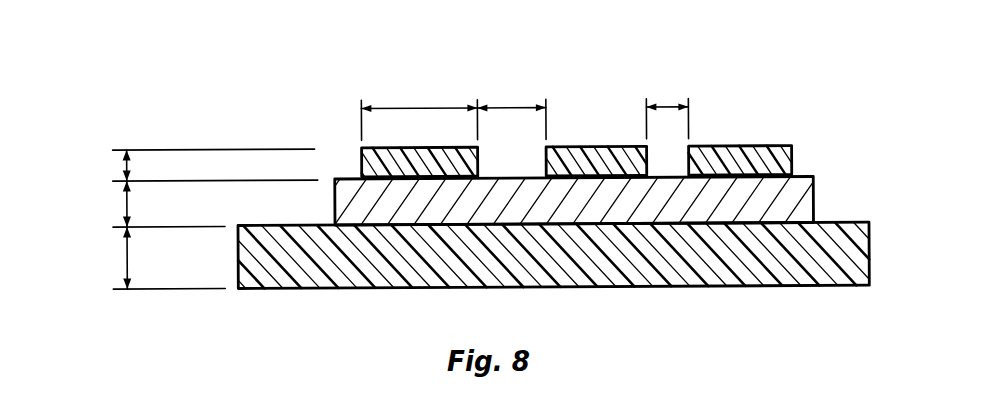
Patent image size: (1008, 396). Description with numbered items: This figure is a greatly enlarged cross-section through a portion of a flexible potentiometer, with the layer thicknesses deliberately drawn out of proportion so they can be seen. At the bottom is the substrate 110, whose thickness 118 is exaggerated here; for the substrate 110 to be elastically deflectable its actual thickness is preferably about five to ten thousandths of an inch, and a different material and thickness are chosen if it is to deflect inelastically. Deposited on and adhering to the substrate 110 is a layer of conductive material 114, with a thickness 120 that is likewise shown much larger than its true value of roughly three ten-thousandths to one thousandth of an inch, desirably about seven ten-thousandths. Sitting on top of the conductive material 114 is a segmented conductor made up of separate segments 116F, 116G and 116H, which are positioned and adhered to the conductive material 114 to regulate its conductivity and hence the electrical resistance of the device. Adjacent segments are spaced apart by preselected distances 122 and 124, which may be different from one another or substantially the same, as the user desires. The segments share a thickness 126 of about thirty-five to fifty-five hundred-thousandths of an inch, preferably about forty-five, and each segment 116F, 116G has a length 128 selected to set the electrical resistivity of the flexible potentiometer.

The substrate 110 is at (808, 287).
The conductive material 114 is at (815, 188).
The segment of segmented conductor 116F is at (362, 157).
The segment of segmented conductor 116G is at (595, 146).
The segment of segmented conductor 116H is at (751, 146).
The thickness of substrate 118 is at (127, 254).
The thickness of conductive material 120 is at (127, 202).
The preselected distance 122 is at (510, 108).
The preselected distance 124 is at (668, 107).
The thickness of segmented conductor 126 is at (128, 166).
The length of segment 128 is at (422, 108).